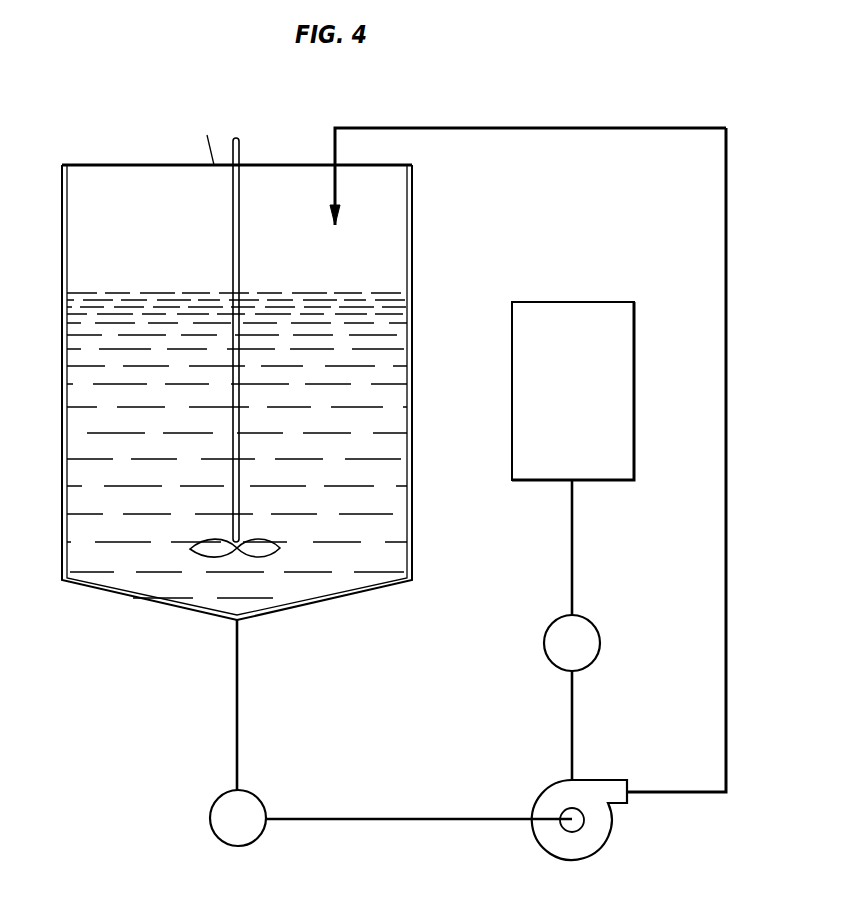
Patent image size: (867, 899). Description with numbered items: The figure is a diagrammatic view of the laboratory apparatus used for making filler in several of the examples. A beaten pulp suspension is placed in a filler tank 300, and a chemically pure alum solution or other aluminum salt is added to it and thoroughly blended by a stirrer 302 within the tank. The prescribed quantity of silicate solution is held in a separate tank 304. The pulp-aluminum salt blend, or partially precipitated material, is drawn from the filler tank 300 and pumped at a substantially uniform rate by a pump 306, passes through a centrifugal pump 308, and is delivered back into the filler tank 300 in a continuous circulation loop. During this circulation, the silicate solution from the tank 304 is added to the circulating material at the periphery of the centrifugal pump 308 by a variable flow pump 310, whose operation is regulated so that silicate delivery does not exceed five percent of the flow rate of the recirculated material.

The filler tank 300 is at (62, 479).
The stirrer 302 is at (265, 547).
The tank 304 is at (615, 455).
The pump 306 is at (258, 798).
The centrifugal pump 308 is at (594, 837).
The variable flow pump 310 is at (600, 643).